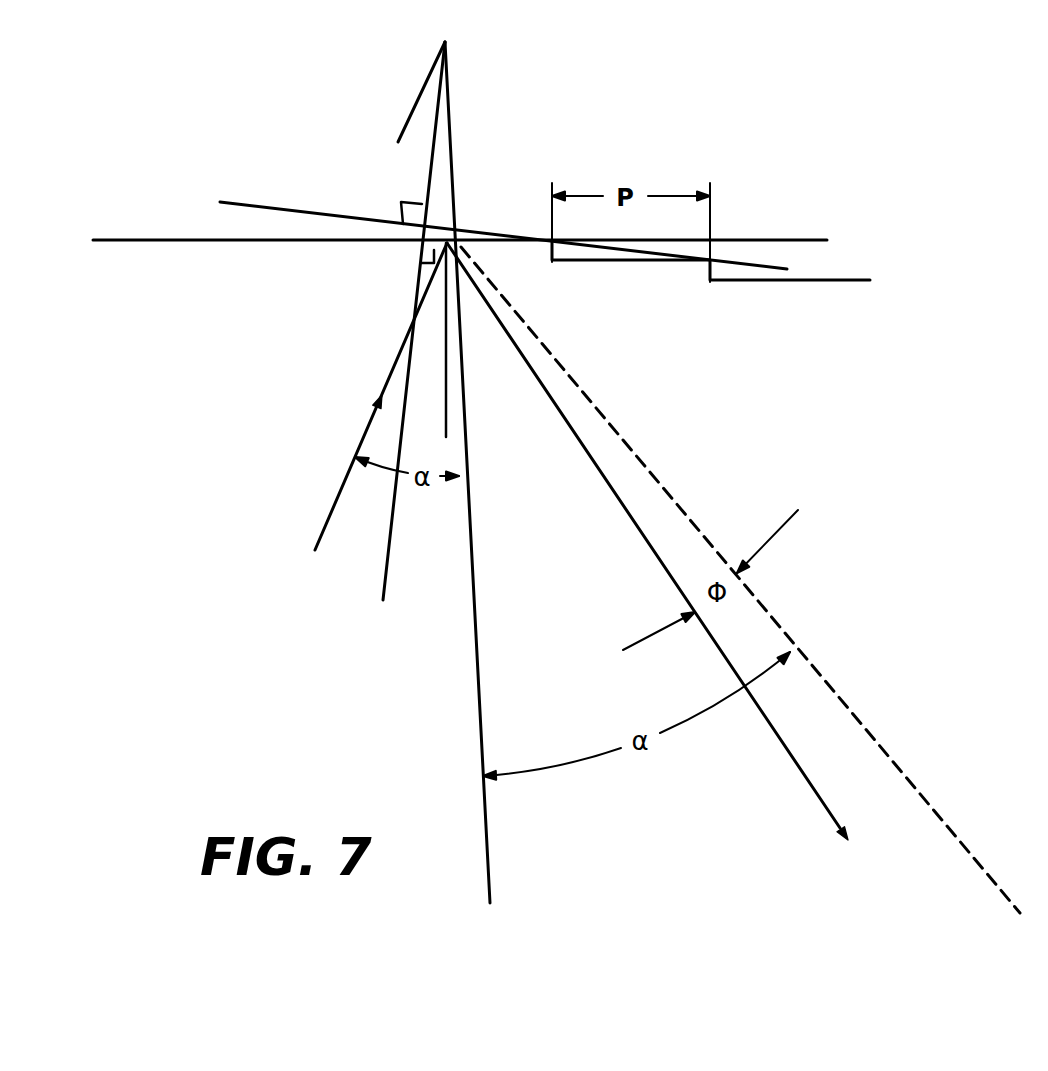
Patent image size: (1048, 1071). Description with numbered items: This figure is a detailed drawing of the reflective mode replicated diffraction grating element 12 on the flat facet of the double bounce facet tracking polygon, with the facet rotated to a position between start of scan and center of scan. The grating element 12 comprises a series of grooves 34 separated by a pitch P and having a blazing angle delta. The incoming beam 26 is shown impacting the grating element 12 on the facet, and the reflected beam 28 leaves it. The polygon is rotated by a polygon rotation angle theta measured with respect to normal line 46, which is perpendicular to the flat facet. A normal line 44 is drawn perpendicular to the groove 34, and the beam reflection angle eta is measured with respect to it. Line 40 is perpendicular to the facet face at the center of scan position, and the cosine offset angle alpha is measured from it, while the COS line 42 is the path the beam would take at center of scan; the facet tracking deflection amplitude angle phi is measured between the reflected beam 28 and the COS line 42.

The reflective mode replicated diffraction grating element 12 is at (240, 201).
The grooves 34 is at (345, 238).
The normal line 46 is at (436, 119).
The normal line 44 is at (442, 378).
The incoming beam 26 is at (330, 512).
The reflected beam 28 is at (812, 793).
The line 40 is at (487, 846).
The COS line 42 is at (975, 857).